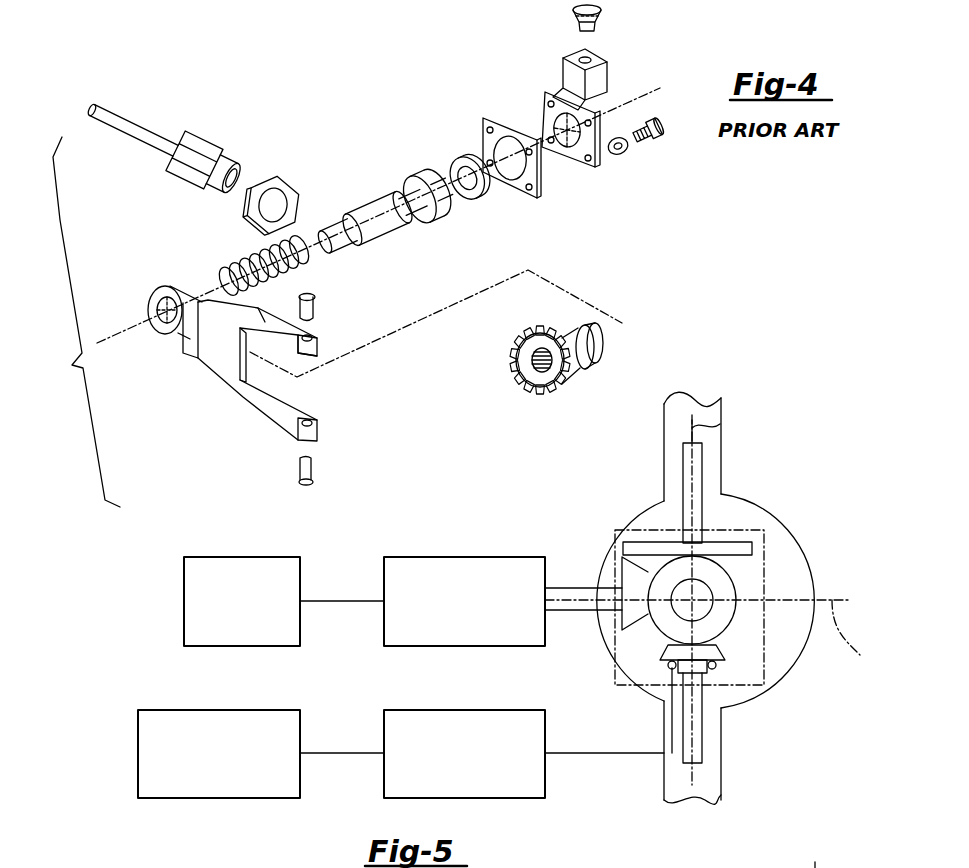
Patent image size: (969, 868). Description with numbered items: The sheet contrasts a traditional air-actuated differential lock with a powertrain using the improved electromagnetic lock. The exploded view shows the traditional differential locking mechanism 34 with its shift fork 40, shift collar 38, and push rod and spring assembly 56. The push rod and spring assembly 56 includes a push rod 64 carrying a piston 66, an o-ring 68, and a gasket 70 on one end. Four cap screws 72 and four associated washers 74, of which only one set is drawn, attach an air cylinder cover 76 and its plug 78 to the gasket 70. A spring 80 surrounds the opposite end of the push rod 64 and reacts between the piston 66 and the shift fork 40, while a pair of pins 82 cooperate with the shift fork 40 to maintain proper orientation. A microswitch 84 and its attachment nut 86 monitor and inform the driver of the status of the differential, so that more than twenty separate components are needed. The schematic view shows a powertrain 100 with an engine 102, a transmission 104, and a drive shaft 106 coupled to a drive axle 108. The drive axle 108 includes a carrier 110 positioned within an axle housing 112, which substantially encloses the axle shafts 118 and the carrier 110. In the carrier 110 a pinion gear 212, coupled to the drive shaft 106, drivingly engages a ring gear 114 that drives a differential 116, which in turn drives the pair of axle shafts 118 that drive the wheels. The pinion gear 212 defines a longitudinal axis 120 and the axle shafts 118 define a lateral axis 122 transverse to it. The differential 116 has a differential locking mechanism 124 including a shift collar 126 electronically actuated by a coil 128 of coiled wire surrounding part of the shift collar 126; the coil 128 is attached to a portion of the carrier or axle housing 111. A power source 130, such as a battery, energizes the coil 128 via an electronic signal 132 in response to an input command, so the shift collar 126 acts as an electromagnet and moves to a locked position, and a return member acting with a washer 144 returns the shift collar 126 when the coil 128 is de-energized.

In FIG. 4, the differential locking mechanism 34 is at (79, 322).
In FIG. 4, the shift collar 38 is at (512, 348).
In FIG. 4, the shift fork 40 is at (152, 300).
In FIG. 4, the push rod and spring assembly 56 is at (394, 178).
In FIG. 4, the push rod 64 is at (385, 238).
In FIG. 4, the piston 66 is at (428, 218).
In FIG. 4, the o-ring 68 is at (470, 202).
In FIG. 4, the gasket 70 is at (508, 190).
In FIG. 4, the cap screws 72 is at (660, 138).
In FIG. 4, the washers 74 is at (619, 155).
In FIG. 4, the air cylinder cover 76 is at (607, 78).
In FIG. 4, the plug 78 is at (566, 22).
In FIG. 4, the spring 80 is at (248, 268).
In FIG. 4, the pins 82 is at (314, 317).
In FIG. 4, the microswitch 84 is at (195, 140).
In FIG. 4, the attachment nut 86 is at (275, 176).
In FIG. 5, the powertrain 100 is at (505, 518).
In FIG. 5, the engine 102 is at (184, 612).
In FIG. 5, the transmission 104 is at (384, 577).
In FIG. 5, the drive shaft 106 is at (572, 588).
In FIG. 5, the drive axle 108 is at (717, 438).
In FIG. 5, the carrier 110 is at (767, 582).
In FIG. 5, the carrier or axle housing portion 111 is at (664, 440).
In FIG. 5, the axle housing 112 is at (603, 670).
In FIG. 5, the ring gear 114 is at (735, 530).
In FIG. 5, the differential 116 is at (684, 611).
In FIG. 5, the axle shafts 118 is at (702, 470).
In FIG. 5, the longitudinal axis 120 is at (858, 641).
In FIG. 5, the lateral axis 122 is at (722, 408).
In FIG. 5, the differential locking mechanism 124 is at (138, 749).
In FIG. 5, the shift collar 126 is at (720, 650).
In FIG. 5, the coil 128 is at (663, 672).
In FIG. 5, the power source 130 is at (384, 732).
In FIG. 5, the electronic signal 132 is at (578, 773).
In FIG. 5, the washer 144 is at (820, 854).
In FIG. 5, the pinion gear 212 is at (622, 613).